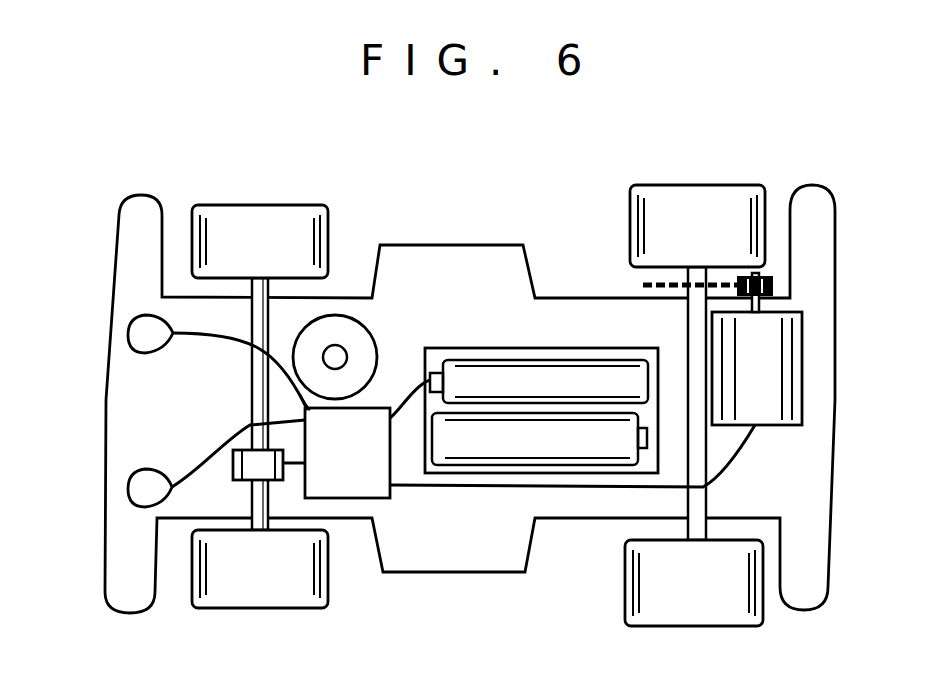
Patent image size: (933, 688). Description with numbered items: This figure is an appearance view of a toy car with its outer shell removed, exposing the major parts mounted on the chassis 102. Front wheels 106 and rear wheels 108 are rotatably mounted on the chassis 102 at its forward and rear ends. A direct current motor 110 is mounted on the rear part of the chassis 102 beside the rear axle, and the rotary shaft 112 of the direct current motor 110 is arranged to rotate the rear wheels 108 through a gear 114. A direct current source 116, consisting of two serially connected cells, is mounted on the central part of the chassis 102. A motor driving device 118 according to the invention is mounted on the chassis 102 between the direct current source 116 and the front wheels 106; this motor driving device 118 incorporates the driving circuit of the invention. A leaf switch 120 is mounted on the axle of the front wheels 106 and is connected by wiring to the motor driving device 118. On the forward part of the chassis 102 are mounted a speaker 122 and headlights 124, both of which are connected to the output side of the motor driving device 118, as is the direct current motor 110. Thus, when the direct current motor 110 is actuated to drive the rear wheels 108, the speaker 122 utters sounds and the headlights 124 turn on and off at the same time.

The chassis 102 is at (486, 258).
The front wheels 106 is at (327, 176).
The rear wheels 108 is at (735, 197).
The direct current motor 110 is at (803, 383).
The rotary shaft 112 is at (760, 302).
The gear 114 is at (775, 285).
The direct current source 116 is at (490, 348).
The motor driving device 118 is at (373, 490).
The leaf switch 120 is at (257, 460).
The speaker 122 is at (367, 352).
The headlights 124 is at (140, 340).